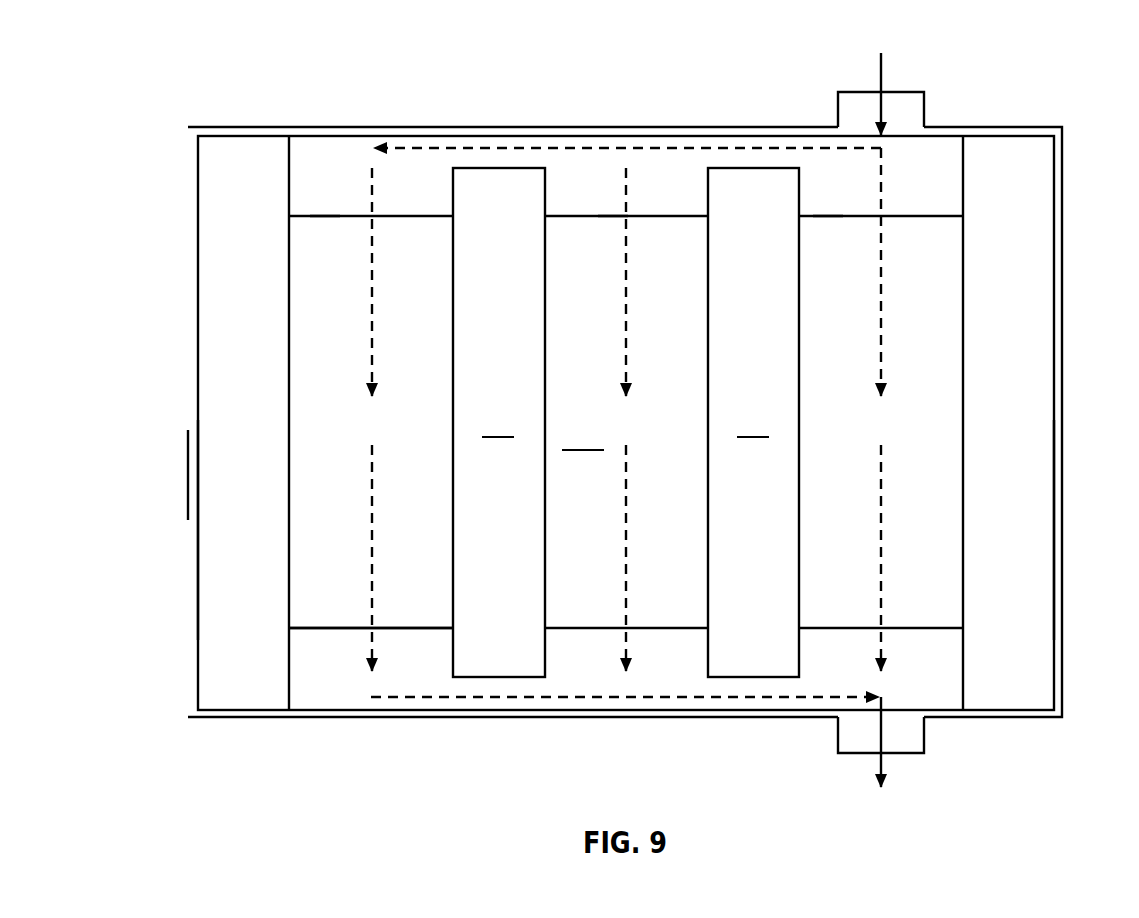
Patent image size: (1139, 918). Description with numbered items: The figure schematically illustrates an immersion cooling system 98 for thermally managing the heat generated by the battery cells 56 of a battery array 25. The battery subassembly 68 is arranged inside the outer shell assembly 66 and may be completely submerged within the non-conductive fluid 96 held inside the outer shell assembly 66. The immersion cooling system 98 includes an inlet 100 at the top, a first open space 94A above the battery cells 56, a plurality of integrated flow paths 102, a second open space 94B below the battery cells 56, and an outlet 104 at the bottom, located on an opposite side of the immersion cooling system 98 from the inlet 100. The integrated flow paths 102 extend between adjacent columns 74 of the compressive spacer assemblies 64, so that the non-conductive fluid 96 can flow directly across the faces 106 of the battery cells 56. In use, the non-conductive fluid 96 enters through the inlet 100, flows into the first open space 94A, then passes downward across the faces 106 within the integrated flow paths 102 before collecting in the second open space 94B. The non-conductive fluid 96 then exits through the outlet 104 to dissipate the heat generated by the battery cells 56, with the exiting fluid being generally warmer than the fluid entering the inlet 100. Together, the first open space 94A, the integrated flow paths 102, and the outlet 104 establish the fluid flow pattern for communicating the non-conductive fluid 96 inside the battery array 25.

The battery array 25 is at (119, 81).
The battery cells 56 is at (332, 612).
The compressive spacer assemblies 64 is at (1033, 185).
The outer shell assembly 66 is at (186, 478).
The battery subassembly 68 is at (287, 365).
The columns 74 is at (225, 530).
The first open space 94A is at (556, 185).
The second open space 94B is at (770, 706).
The non-conductive fluid 96 is at (417, 147).
The immersion cooling system 98 is at (643, 146).
The inlet 100 is at (914, 118).
The integrated flow paths 102 is at (325, 237).
The outlet 104 is at (914, 727).
The faces 106 is at (592, 419).